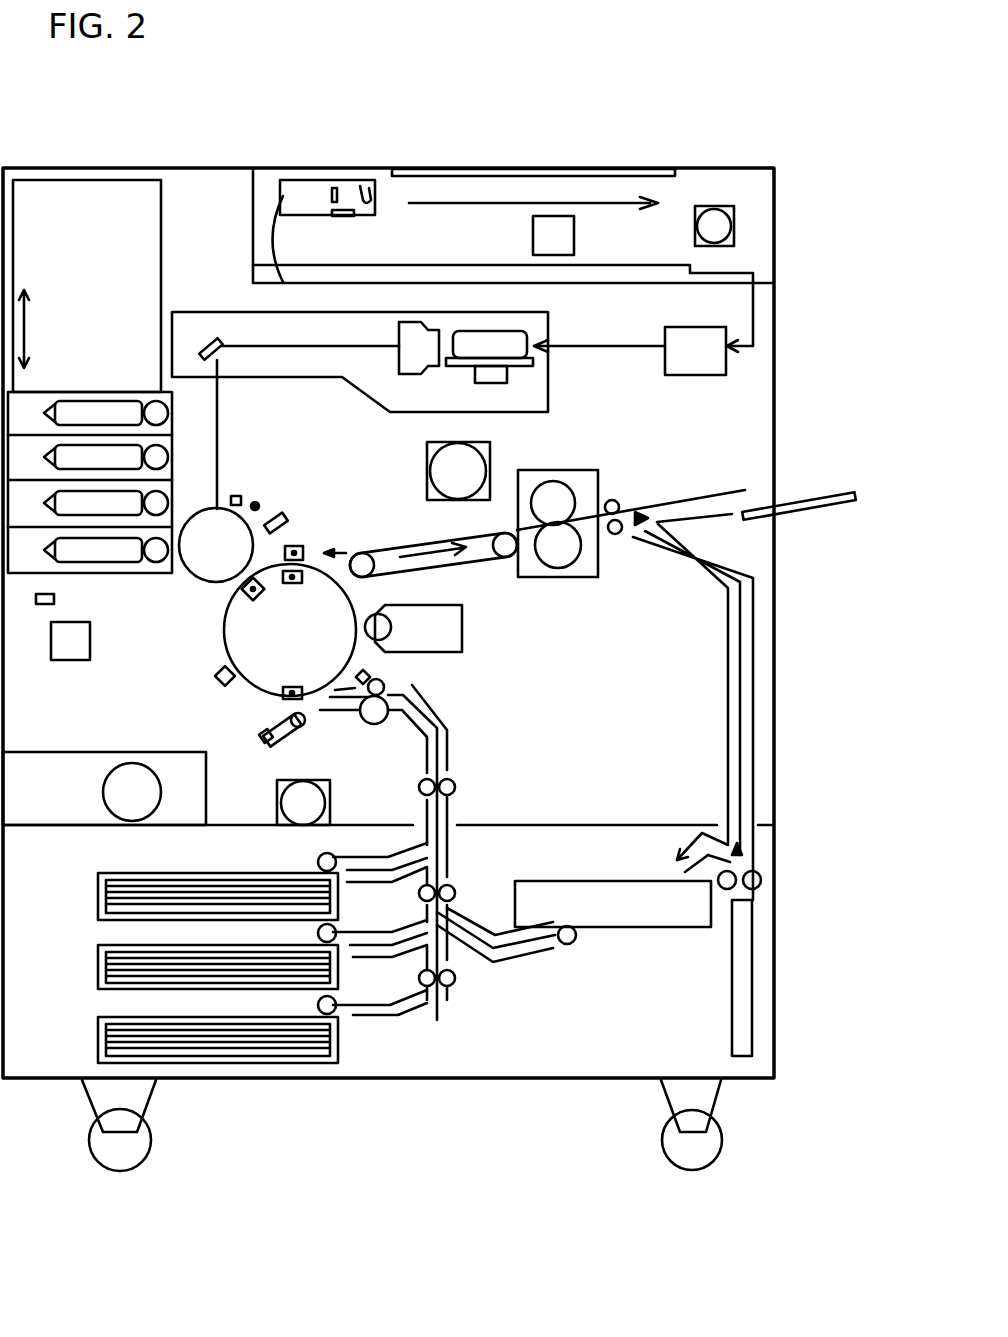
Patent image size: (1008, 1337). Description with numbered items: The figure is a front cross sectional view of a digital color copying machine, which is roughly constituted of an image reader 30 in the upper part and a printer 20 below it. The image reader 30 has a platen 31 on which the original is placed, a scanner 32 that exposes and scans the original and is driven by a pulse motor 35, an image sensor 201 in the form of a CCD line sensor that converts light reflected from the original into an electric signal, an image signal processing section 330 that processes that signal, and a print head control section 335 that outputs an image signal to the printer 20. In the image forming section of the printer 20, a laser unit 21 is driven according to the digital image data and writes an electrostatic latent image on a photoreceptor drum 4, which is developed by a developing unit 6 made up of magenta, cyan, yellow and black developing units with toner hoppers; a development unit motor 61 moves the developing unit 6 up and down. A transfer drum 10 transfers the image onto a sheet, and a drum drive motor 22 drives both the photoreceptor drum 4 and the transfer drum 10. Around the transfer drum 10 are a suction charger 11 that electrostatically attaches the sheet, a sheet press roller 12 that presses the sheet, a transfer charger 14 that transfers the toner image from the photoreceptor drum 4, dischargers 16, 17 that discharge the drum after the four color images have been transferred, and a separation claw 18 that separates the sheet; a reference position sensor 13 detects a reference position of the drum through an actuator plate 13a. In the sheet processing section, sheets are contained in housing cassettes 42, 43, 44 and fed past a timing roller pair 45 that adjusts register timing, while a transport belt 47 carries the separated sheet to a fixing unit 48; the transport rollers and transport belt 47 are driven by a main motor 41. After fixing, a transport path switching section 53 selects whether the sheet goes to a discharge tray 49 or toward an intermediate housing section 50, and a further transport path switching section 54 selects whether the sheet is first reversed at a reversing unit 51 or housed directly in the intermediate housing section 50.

The photoreceptor drum 4 is at (198, 582).
The developing unit 6 is at (54, 395).
The transfer drum 10 is at (222, 643).
The suction charger 11 is at (286, 687).
The sheet press roller 12 is at (292, 745).
The reference position sensor 13 is at (373, 675).
The actuator plate 13a is at (219, 678).
The transfer charger 14 is at (248, 601).
The discharger 16 is at (300, 583).
The discharger 17 is at (299, 543).
The separation claw 18 is at (334, 548).
The printer 20 is at (71, 642).
The laser unit 21 is at (307, 380).
The drum drive motor 22 is at (458, 471).
The image reader 30 is at (554, 235).
The platen 31 is at (556, 168).
The scanner 32 is at (303, 192).
The pulse motor 35 is at (736, 226).
The main motor 41 is at (303, 802).
The housing cassette 42 is at (98, 895).
The housing cassette 43 is at (98, 967).
The housing cassette 44 is at (98, 1039).
The timing roller pair 45 is at (388, 722).
The transport belt 47 is at (443, 535).
The fixing unit 48 is at (560, 470).
The discharge tray 49 is at (790, 502).
The intermediate housing section 50 is at (628, 912).
The reversing unit 51 is at (730, 1038).
The transport path switching section 53 is at (630, 535).
The transport path switching section 54 is at (745, 862).
The development unit motor 61 is at (103, 790).
The image sensor 201 is at (345, 214).
The image signal processing section 330 is at (652, 265).
The print head control section 335 is at (680, 376).